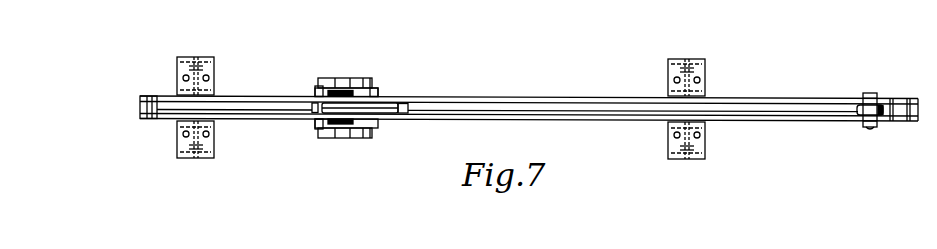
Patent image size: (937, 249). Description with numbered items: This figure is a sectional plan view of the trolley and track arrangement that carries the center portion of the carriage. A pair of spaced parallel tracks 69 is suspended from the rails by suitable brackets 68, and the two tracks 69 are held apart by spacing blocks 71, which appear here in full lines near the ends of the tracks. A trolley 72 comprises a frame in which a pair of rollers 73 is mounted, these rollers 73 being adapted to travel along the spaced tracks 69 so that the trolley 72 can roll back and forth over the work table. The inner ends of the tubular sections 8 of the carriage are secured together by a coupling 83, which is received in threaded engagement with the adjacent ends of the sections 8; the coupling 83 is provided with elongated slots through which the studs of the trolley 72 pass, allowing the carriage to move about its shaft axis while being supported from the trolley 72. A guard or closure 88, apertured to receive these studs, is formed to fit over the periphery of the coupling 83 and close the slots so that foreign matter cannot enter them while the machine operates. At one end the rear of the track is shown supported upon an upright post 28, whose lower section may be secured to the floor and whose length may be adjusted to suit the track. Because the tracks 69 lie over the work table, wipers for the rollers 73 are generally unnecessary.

The tubular sections 8 is at (365, 79).
The upright post 28 is at (857, 109).
The brackets 68 is at (213, 70).
The tracks 69 is at (535, 97).
The spacing blocks 71 is at (140, 107).
The trolley 72 is at (389, 115).
The rollers 73 is at (335, 91).
The coupling 83 is at (318, 89).
The guard 88 is at (379, 93).